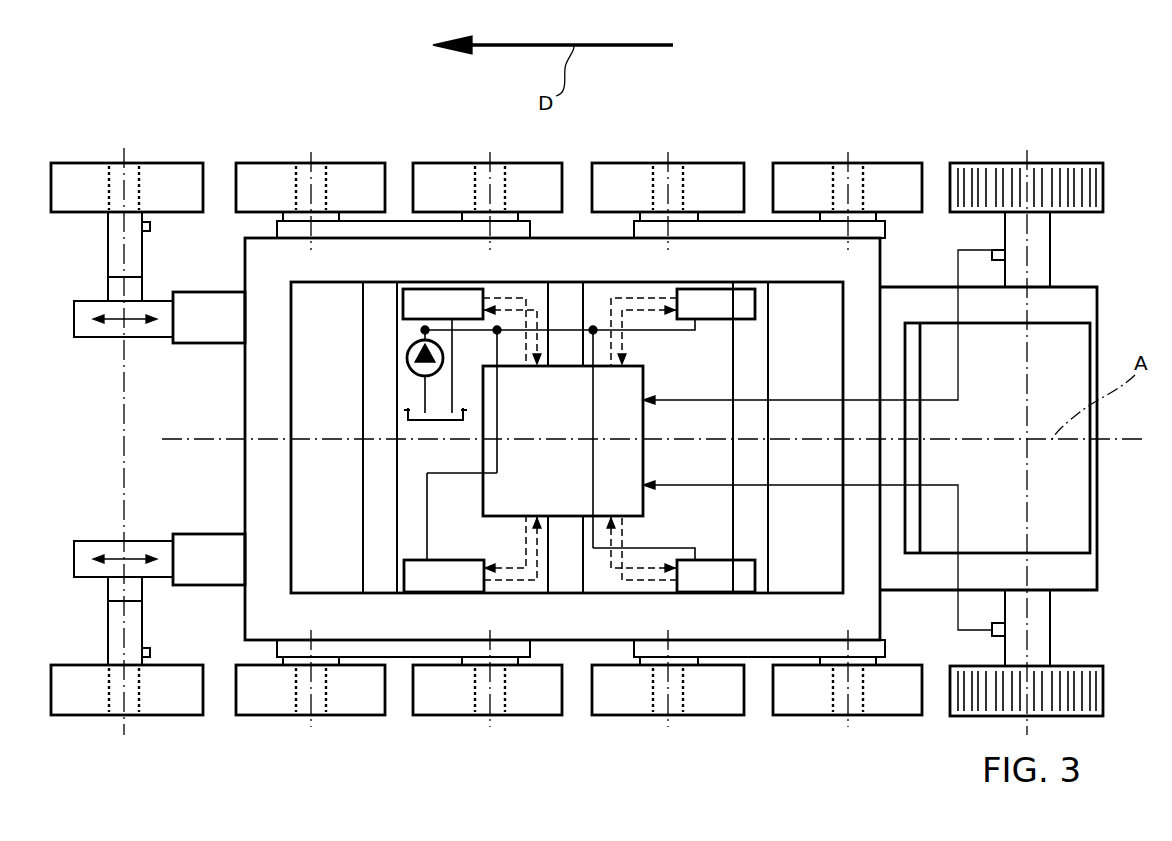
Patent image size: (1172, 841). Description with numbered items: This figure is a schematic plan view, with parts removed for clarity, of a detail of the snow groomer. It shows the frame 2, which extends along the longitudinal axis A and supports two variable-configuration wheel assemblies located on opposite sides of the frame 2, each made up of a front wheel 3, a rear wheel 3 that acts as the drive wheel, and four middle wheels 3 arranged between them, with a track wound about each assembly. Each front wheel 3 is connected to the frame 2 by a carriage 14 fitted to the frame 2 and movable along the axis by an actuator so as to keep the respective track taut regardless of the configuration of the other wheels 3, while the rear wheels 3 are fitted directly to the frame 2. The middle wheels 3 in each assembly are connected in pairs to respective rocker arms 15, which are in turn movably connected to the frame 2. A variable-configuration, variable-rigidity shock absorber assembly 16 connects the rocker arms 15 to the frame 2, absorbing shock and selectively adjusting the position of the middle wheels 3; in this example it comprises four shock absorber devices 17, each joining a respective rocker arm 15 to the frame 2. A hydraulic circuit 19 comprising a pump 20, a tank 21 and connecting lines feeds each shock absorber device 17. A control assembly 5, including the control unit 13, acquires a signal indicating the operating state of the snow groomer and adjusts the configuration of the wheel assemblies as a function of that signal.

The frame 2 is at (870, 594).
The wheel 3 is at (185, 185).
The control assembly 5 is at (790, 453).
The control unit 13 is at (620, 458).
The carriage 14 is at (148, 323).
The rocker arm 15 is at (410, 230).
The shock absorber assembly 16 is at (428, 435).
The shock absorber device 17 is at (411, 298).
The hydraulic circuit 19 is at (650, 343).
The pump 20 is at (400, 356).
The tank 21 is at (400, 413).